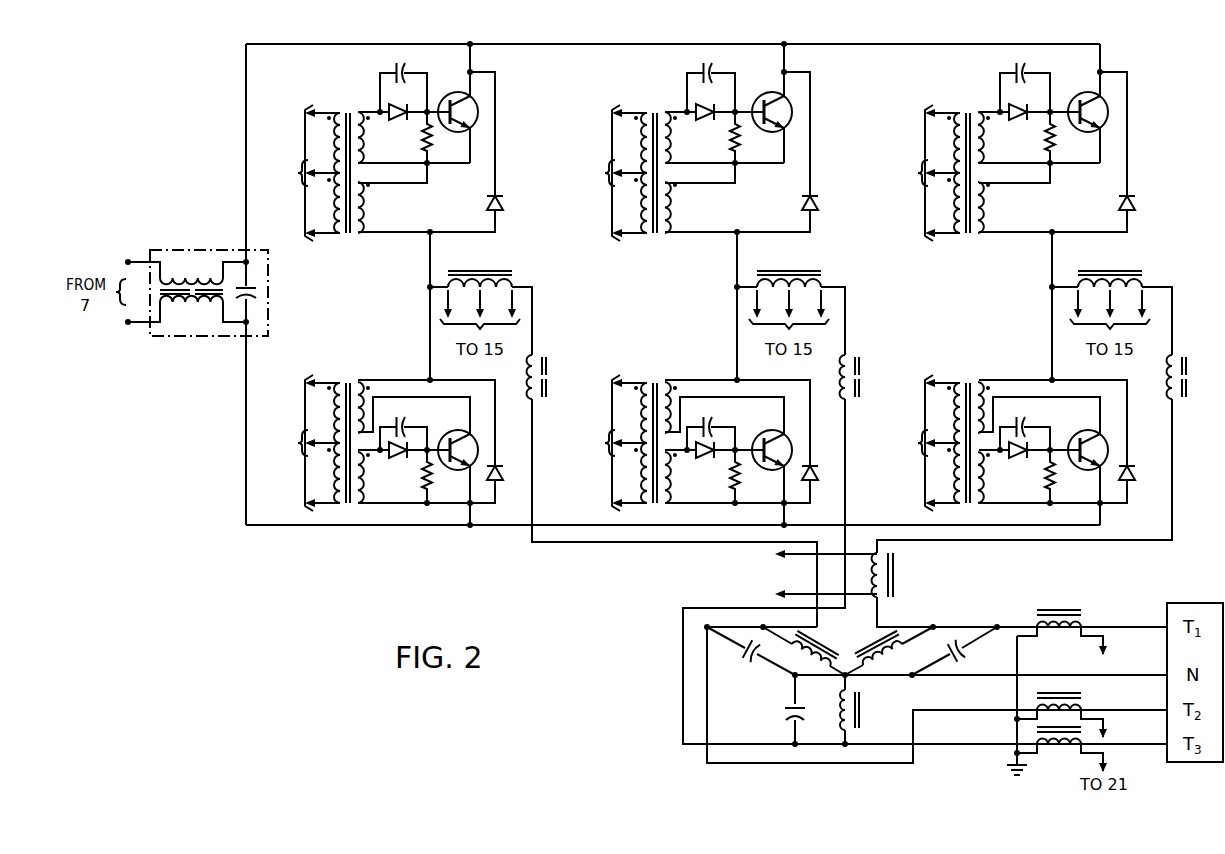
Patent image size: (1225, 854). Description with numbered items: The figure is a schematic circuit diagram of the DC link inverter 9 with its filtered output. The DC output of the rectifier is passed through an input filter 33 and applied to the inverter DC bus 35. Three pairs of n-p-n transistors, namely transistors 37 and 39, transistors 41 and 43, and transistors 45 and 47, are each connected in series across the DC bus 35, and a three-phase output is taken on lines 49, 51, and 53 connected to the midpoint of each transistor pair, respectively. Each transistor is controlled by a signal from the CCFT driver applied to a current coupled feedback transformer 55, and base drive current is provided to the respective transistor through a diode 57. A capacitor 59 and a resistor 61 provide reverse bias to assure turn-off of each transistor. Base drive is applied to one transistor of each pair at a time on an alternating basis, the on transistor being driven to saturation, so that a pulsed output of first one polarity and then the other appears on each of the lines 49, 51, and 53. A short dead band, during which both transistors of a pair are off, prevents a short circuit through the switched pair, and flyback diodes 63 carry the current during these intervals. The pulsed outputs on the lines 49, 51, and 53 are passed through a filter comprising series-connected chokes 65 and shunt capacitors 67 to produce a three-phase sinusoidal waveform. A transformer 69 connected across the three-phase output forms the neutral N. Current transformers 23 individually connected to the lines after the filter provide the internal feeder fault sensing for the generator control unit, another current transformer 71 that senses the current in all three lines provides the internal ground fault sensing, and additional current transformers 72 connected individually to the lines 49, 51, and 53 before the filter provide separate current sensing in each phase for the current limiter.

The DC link inverter 9 is at (342, 557).
The current transformer 23 is at (1083, 614).
The input filter 33 is at (178, 250).
The inverter DC bus 35 is at (303, 46).
The n-p-n transistor 37 is at (469, 128).
The n-p-n transistor 39 is at (469, 466).
The n-p-n transistor 41 is at (784, 80).
The n-p-n transistor 43 is at (782, 466).
The n-p-n transistor 45 is at (1098, 80).
The n-p-n transistor 47 is at (1096, 466).
The output line 49 is at (534, 322).
The output line 51 is at (846, 322).
The output line 53 is at (1174, 322).
The current coupled feedback transformer 55 is at (348, 108).
The diode 57 is at (403, 125).
The capacitor 59 is at (398, 65).
The resistor 61 is at (425, 136).
The flyback diode 63 is at (487, 204).
The choke 65 is at (536, 360).
The shunt capacitor 67 is at (742, 657).
The transformer 69 is at (843, 652).
The current transformer 71 is at (889, 600).
The current transformer 72 is at (506, 281).